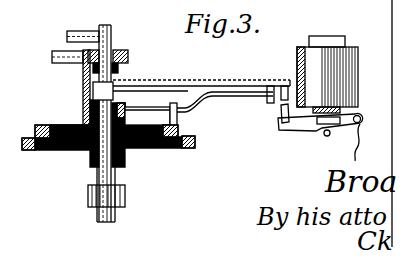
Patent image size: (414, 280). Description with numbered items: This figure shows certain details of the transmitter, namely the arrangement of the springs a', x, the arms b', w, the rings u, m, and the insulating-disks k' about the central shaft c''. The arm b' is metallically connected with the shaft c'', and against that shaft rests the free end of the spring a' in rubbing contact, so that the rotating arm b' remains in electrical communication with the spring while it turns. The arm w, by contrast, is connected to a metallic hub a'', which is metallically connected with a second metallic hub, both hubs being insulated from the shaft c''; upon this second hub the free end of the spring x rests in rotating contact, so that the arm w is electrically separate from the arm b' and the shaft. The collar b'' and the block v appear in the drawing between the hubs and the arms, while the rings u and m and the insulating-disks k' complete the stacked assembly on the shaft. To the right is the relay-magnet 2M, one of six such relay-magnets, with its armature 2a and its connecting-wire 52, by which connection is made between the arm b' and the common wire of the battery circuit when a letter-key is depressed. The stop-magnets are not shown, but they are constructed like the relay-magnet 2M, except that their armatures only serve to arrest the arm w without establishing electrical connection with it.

The spring a' is at (83, 29).
The spring x is at (63, 60).
The shaft c'' is at (118, 123).
The insulating-disk k' is at (114, 178).
The collar b'' is at (114, 93).
The rotating arm b' is at (201, 84).
The metallic hub a'' is at (147, 116).
The block v is at (178, 116).
The arm w is at (238, 96).
The ring u is at (35, 129).
The ring m is at (22, 145).
The relay-magnet 2M is at (326, 52).
The armature 2a is at (283, 107).
The connecting-wire 52 is at (350, 142).